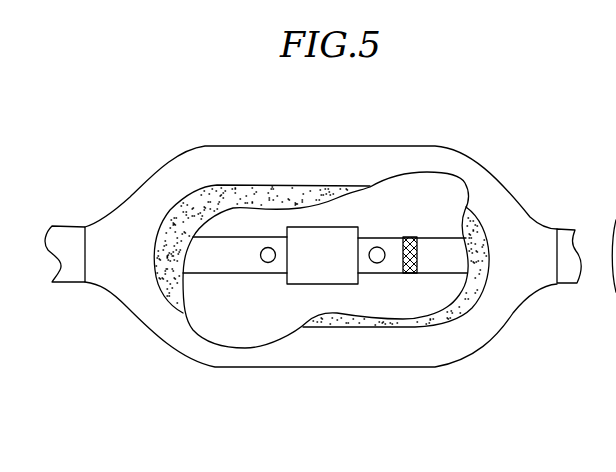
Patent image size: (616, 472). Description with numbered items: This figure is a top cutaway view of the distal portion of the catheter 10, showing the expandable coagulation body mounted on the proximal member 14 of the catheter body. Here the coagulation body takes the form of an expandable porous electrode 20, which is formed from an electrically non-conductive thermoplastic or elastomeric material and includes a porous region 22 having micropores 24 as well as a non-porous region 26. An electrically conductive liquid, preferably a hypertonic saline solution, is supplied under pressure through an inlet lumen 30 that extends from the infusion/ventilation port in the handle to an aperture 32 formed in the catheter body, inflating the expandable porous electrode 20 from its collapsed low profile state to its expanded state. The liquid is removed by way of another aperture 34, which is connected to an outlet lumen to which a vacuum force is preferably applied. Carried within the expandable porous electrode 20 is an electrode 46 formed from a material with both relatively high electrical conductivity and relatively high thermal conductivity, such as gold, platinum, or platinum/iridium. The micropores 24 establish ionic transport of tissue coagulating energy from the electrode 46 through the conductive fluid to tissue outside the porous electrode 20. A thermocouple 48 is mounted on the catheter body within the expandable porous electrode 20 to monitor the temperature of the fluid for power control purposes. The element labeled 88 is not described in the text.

The catheter 10 is at (615, 385).
The proximal member 14 is at (68, 236).
The expandable porous electrode structure 20 is at (497, 139).
The porous region 22 is at (442, 328).
The micropores 24 is at (473, 296).
The non-porous region 26 is at (203, 149).
The inlet lumen 30 is at (615, 146).
The aperture 32 is at (268, 263).
The aperture 34 is at (377, 246).
The electrode 46 is at (325, 227).
The thermocouple 48 is at (407, 236).
The component 88 is at (615, 318).